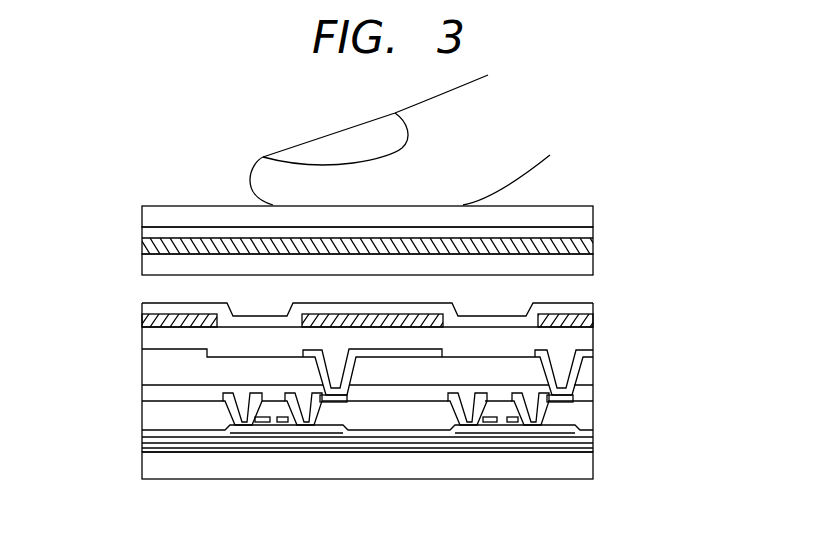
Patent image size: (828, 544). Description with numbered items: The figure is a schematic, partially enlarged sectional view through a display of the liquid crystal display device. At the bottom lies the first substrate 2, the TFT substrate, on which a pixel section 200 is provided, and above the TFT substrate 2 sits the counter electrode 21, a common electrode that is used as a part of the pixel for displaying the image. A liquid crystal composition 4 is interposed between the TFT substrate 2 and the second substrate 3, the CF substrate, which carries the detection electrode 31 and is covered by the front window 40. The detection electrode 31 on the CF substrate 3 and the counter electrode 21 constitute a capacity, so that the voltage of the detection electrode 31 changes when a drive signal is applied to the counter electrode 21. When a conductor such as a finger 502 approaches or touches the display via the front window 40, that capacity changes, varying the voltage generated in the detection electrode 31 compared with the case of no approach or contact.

The finger 502 is at (300, 150).
The front window 40 is at (594, 213).
The detection electrode 31 is at (594, 242).
The second substrate 3 is at (594, 262).
The liquid crystal composition 4 is at (572, 290).
The counter electrode 21 is at (143, 317).
The pixel section 200 is at (605, 303).
The first substrate 2 is at (583, 469).